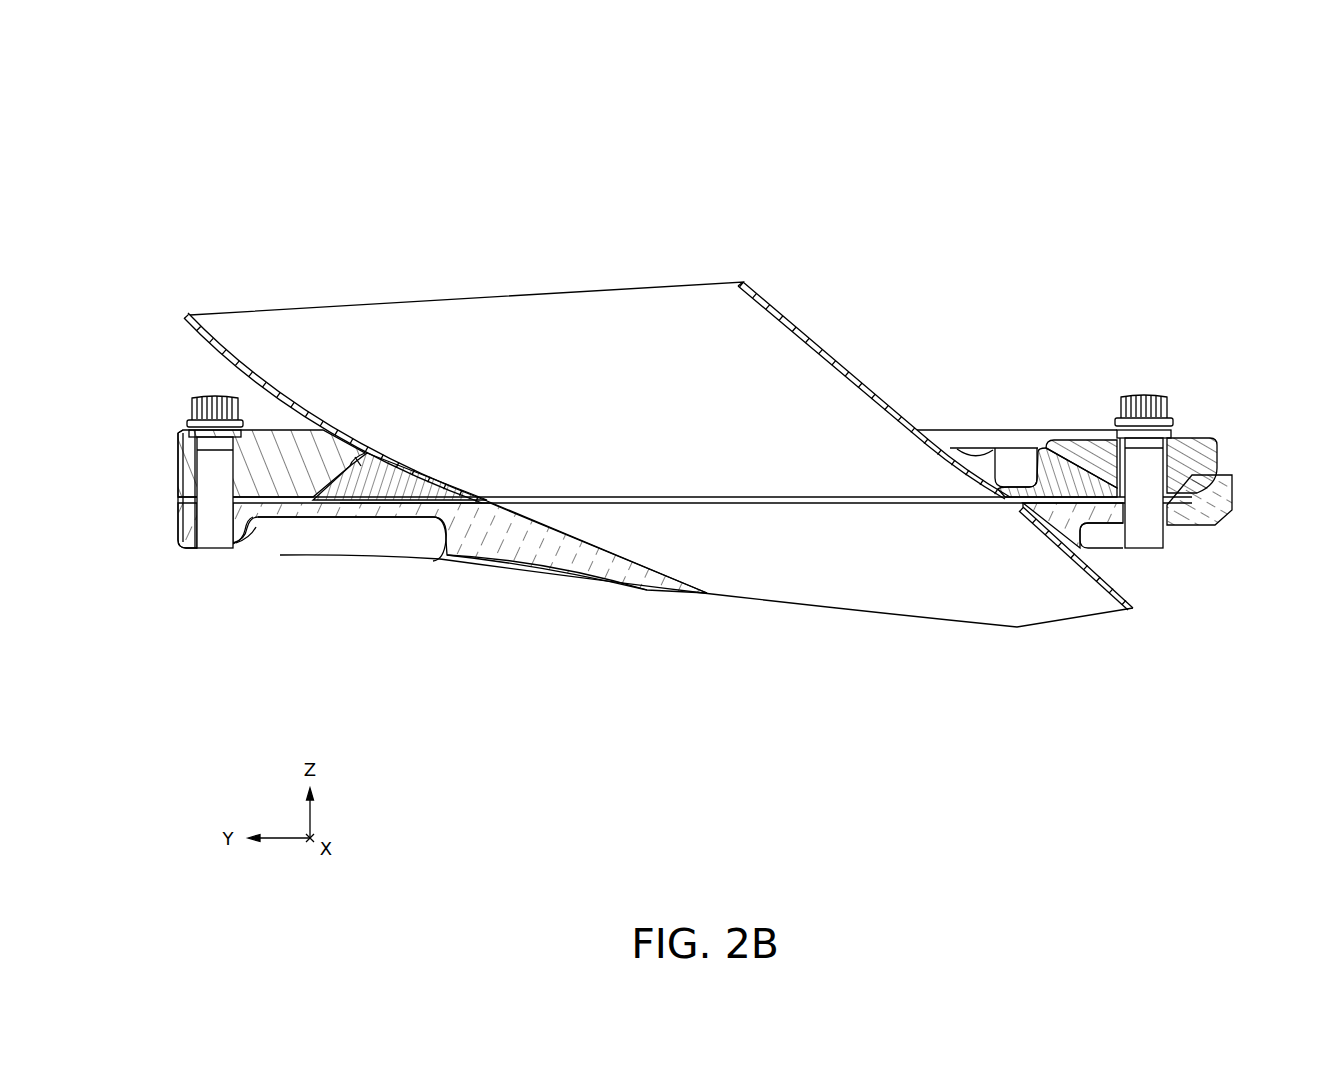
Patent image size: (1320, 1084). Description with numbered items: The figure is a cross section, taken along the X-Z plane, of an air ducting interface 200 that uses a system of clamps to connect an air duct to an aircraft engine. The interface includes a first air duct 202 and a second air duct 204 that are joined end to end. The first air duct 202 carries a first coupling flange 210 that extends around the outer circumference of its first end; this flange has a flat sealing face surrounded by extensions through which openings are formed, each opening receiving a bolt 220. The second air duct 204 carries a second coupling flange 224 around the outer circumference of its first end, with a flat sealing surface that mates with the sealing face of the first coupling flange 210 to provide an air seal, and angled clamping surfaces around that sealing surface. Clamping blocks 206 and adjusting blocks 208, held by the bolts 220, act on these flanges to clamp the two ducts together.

The air ducting interface 200 is at (248, 126).
The first air duct 202 is at (355, 609).
The second air duct 204 is at (858, 248).
The clamping block 206 is at (283, 430).
The adjusting block 208 is at (1196, 452).
The first coupling flange 210 is at (268, 518).
The bolt 220 is at (215, 400).
The second coupling flange 224 is at (405, 467).